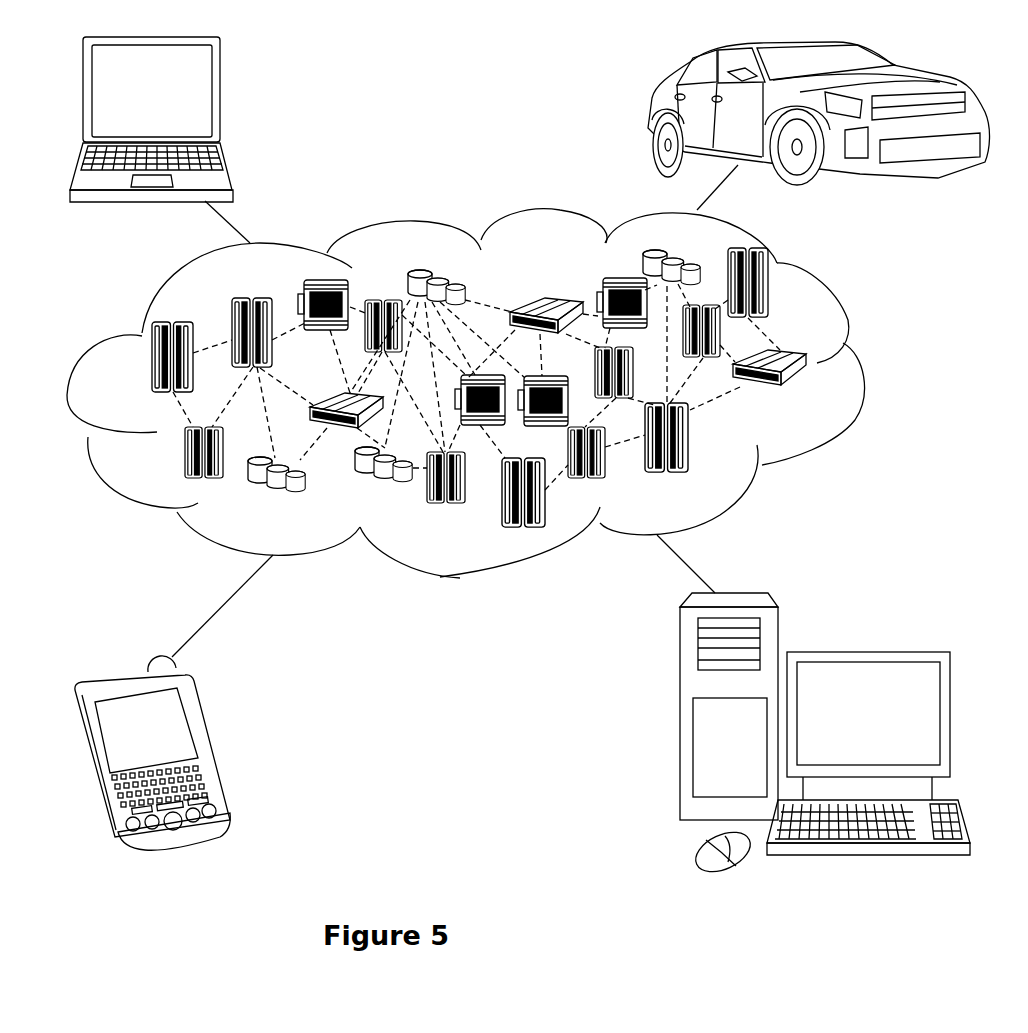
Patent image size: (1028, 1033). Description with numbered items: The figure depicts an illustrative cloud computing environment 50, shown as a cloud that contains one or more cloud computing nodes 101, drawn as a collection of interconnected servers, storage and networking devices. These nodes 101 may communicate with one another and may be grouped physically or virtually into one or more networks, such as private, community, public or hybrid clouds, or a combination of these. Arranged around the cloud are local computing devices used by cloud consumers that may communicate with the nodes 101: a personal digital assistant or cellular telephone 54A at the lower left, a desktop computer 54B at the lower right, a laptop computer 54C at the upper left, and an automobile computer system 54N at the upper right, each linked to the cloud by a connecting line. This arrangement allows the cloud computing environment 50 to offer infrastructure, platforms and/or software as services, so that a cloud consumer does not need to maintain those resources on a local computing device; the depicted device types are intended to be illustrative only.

The cloud computing environment 50 is at (865, 367).
The cloud computing nodes 101 is at (540, 387).
The personal digital assistant or cellular telephone 54A is at (208, 740).
The desktop computer 54B is at (863, 652).
The laptop computer 54C is at (221, 99).
The automobile computer system 54N is at (648, 113).